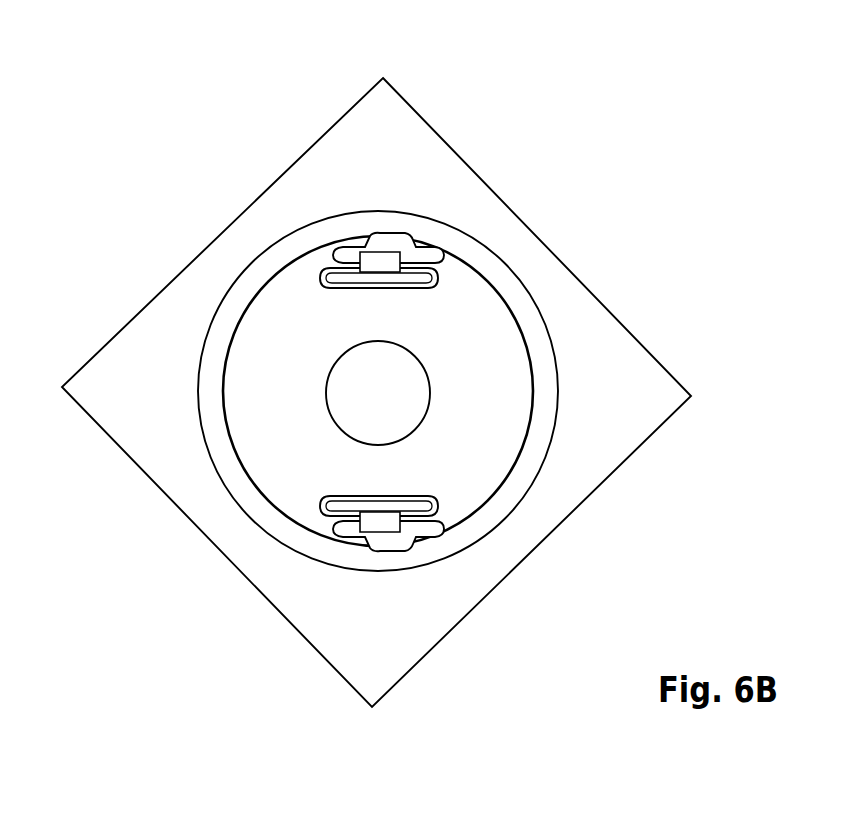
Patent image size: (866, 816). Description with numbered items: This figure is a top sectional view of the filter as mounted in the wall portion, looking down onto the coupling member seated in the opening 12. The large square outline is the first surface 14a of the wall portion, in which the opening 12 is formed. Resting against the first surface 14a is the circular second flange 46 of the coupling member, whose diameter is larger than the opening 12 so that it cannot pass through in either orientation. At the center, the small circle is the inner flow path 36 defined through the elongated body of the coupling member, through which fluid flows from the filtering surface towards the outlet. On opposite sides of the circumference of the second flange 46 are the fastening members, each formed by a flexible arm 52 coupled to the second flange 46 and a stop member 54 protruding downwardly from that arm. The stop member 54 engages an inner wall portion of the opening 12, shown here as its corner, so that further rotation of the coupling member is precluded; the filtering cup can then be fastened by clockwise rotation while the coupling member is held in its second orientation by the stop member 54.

The opening 12 is at (352, 287).
The first surface 14a is at (610, 422).
The inner flow path 36 is at (581, 365).
The second flange 46 is at (463, 295).
The flexible arm 52 is at (425, 237).
The stop member 54 is at (380, 262).